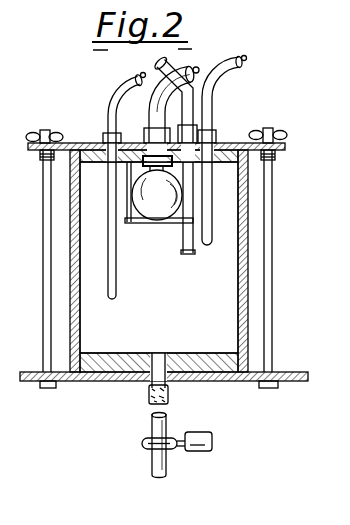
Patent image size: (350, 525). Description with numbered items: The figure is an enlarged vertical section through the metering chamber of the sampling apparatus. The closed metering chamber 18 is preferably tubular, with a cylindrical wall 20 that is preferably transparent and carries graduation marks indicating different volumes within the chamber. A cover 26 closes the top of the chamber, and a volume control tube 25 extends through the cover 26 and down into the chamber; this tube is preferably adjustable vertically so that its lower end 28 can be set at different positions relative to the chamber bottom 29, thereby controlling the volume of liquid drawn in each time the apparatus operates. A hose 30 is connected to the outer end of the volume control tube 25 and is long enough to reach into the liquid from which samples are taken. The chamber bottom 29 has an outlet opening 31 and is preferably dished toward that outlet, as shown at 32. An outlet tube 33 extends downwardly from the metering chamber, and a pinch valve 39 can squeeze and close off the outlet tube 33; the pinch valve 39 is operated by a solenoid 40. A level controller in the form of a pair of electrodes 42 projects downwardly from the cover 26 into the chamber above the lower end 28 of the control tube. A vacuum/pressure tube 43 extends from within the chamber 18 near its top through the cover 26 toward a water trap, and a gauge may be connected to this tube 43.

The metering chamber 18 is at (208, 303).
The cylindrical wall 20 is at (247, 274).
The volume control tube 25 is at (183, 184).
The cover 26 is at (238, 143).
The lower end 28 is at (193, 250).
The chamber bottom 29 is at (213, 368).
The hose 30 is at (188, 62).
The outlet opening 31 is at (162, 355).
The dished portion 32 is at (150, 365).
The outlet tube 33 is at (150, 393).
The pinch valve 39 is at (145, 446).
The solenoid 40 is at (206, 433).
The electrodes 42 is at (208, 217).
The vacuum/pressure tube 43 is at (222, 63).